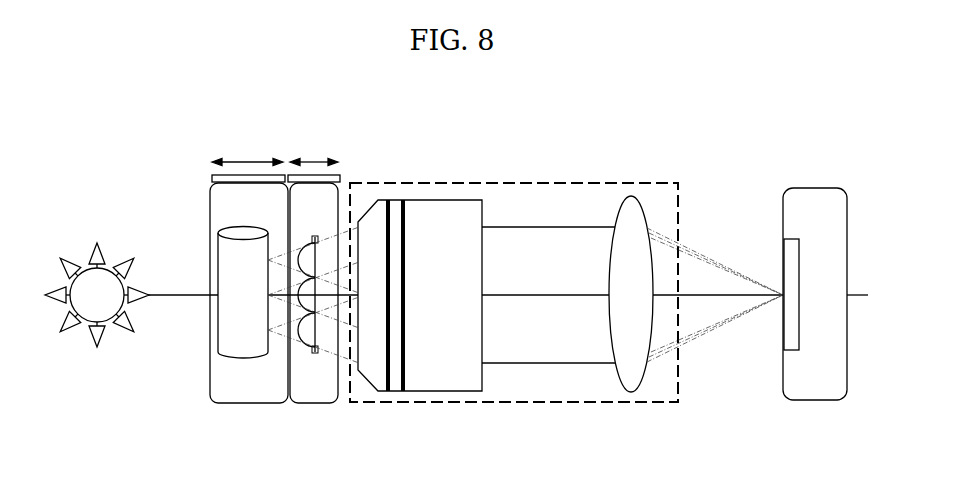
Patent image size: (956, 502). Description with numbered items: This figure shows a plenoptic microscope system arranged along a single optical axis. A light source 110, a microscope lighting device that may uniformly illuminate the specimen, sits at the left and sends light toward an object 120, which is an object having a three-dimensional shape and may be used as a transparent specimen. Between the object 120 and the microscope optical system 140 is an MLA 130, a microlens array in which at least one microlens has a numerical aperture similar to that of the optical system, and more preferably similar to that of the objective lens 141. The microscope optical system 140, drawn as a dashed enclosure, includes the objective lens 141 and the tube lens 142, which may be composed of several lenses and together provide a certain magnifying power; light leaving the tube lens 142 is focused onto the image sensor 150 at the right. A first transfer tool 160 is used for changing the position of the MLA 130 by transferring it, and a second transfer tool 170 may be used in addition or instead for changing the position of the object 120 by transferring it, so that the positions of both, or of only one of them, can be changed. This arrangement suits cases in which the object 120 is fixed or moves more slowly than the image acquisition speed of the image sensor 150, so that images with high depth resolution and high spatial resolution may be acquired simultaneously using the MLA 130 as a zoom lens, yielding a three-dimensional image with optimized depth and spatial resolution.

The light source 110 is at (83, 323).
The object 120 is at (242, 365).
The MLA 130 is at (313, 358).
The microscope optical system 140 is at (503, 183).
The objective lens 141 is at (433, 392).
The tube lens 142 is at (629, 392).
The image sensor 150 is at (815, 400).
The first transfer tool 160 is at (340, 177).
The second transfer tool 170 is at (210, 178).